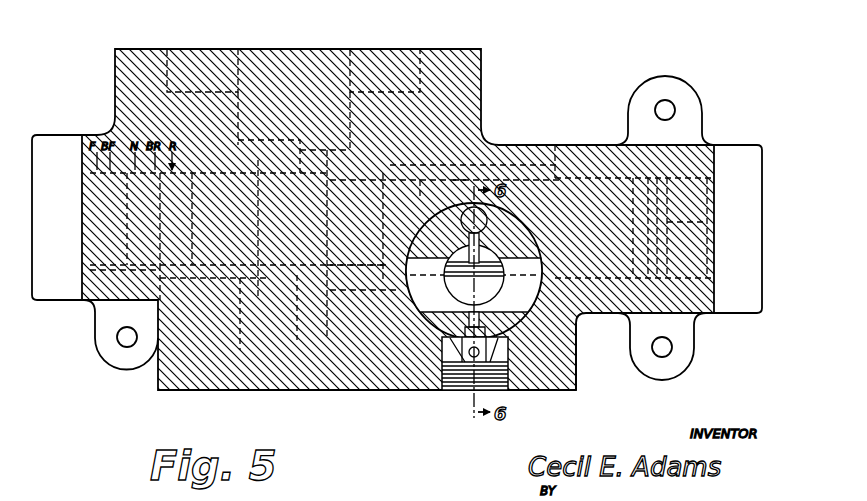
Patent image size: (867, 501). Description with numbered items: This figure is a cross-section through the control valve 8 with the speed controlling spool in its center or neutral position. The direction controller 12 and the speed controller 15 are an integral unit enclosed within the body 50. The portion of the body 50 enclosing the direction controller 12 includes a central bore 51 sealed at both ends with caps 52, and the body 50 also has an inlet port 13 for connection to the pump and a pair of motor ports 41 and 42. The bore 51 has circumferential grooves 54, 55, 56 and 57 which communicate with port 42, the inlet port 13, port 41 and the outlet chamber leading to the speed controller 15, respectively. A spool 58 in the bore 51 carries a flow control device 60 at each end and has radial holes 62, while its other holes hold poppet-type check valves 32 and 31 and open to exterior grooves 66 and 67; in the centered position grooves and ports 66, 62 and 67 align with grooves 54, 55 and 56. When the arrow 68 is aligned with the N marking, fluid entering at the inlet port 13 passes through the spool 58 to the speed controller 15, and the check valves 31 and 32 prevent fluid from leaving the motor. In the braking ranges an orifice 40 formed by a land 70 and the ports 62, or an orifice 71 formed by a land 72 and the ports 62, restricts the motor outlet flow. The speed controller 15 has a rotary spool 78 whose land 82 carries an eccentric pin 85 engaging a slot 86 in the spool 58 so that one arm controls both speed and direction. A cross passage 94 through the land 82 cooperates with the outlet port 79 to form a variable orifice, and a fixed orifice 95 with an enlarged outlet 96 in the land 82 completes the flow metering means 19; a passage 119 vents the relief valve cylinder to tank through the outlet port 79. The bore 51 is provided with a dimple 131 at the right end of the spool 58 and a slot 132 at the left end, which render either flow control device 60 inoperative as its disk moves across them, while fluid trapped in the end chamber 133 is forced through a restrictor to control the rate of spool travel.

The control valve 8 is at (176, 398).
The direction controller 12 is at (164, 42).
The inlet port 13 is at (287, 396).
The speed controller 15 is at (530, 329).
The flow metering means 19 is at (560, 327).
The check valve 31 is at (365, 226).
The check valve 32 is at (210, 157).
The orifice 40 is at (246, 305).
The motor port 41 is at (395, 50).
The motor port 42 is at (206, 50).
The body 50 is at (294, 78).
The central bore 51 is at (718, 190).
The cap 52 is at (56, 302).
The circumferential groove 54 is at (154, 305).
The circumferential groove 55 is at (321, 138).
The circumferential groove 56 is at (365, 309).
The circumferential groove 57 is at (458, 165).
The spool 58 is at (556, 143).
The flow control device 60 is at (398, 225).
The radial holes 62 is at (265, 210).
The circumferential groove 66 is at (258, 144).
The circumferential groove 67 is at (400, 153).
The arrow 68 is at (240, 234).
The land 70 is at (300, 245).
The orifice 71 is at (357, 256).
The land 72 is at (313, 307).
The spool 78 is at (514, 243).
The outlet port 79 is at (512, 366).
The land 82 is at (430, 233).
The pin 85 is at (458, 192).
The slot 86 is at (439, 126).
The cross passage 94 is at (536, 291).
The fixed orifice 95 is at (446, 332).
The enlarged outlet 96 is at (448, 380).
The passage 119 is at (498, 375).
The dimple 131 is at (655, 165).
The slot 132 is at (165, 290).
The end chamber 133 is at (716, 222).